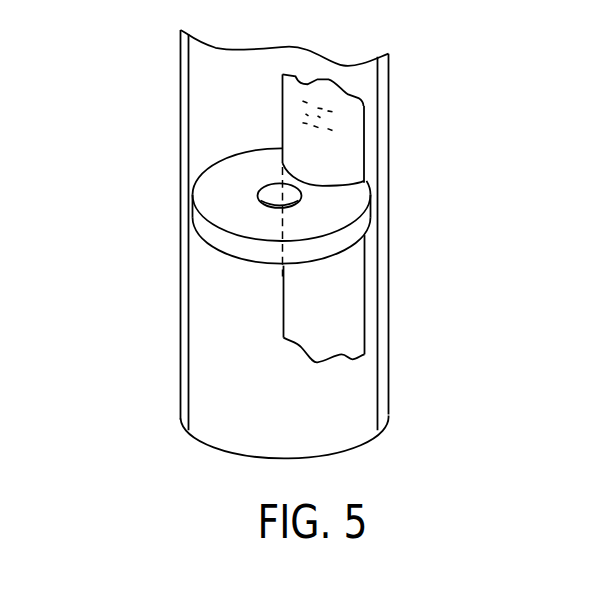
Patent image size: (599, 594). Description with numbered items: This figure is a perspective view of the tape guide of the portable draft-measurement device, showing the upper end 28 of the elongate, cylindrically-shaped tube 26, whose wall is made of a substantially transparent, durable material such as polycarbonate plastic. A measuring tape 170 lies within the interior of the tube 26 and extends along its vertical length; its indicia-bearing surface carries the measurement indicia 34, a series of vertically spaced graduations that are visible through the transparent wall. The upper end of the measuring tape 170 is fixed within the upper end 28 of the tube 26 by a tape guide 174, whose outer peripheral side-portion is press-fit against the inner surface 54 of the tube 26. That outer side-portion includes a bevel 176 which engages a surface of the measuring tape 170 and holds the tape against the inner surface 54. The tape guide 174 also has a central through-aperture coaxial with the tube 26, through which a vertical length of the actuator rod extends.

The tube 26 is at (388, 303).
The upper end 28 is at (172, 240).
The measurement indicia 34 is at (313, 98).
The inner surface 54 is at (377, 369).
The measuring tape 170 is at (377, 188).
The tape guide 174 is at (343, 218).
The bevel 176 is at (343, 185).